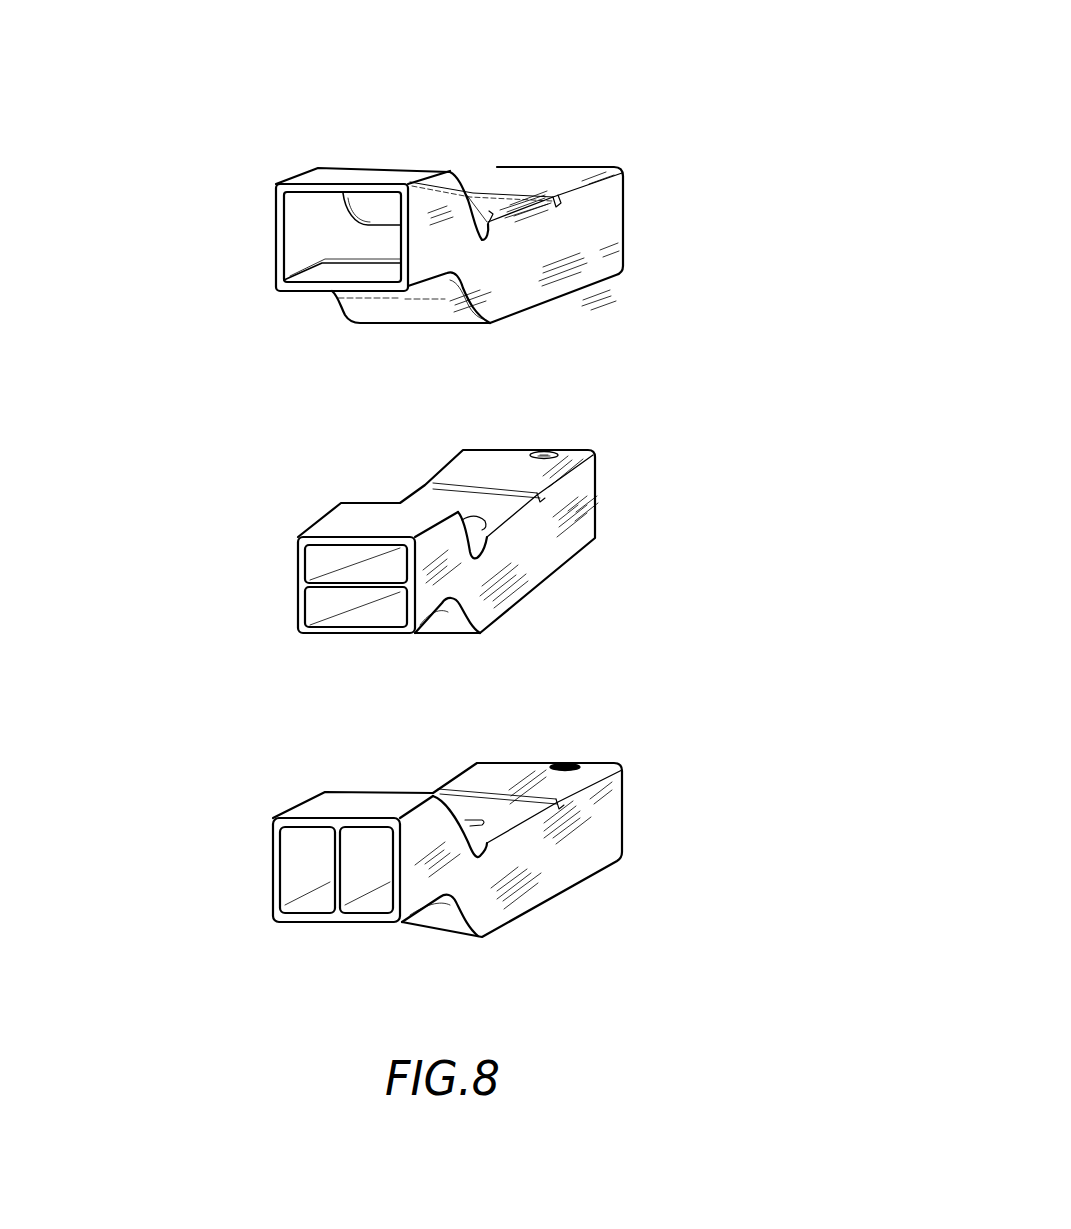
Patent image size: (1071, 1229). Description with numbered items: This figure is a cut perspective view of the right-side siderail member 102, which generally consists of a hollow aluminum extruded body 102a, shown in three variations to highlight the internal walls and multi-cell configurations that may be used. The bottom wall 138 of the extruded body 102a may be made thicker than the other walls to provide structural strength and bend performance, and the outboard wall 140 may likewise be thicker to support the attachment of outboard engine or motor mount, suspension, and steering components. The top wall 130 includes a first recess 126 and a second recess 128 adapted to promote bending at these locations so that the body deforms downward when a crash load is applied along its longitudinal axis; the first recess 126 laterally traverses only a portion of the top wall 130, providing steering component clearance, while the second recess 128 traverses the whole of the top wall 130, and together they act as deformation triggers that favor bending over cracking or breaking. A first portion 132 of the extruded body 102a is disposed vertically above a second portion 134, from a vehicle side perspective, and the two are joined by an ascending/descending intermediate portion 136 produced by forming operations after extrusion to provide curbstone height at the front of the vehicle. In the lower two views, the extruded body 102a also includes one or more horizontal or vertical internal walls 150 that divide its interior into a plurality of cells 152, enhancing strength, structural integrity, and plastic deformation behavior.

The right-side siderail member 102 is at (461, 206).
The hollow aluminum extruded body 102a is at (417, 206).
The first recess 126 is at (495, 238).
The second recess 128 is at (537, 193).
The top wall 130 is at (525, 163).
The first portion 132 is at (392, 158).
The second portion 134 is at (596, 165).
The intermediate portion 136 is at (482, 186).
The bottom wall 138 is at (302, 298).
The outboard wall 140 is at (265, 240).
The internal walls 150 is at (345, 600).
The cells 152 is at (308, 562).